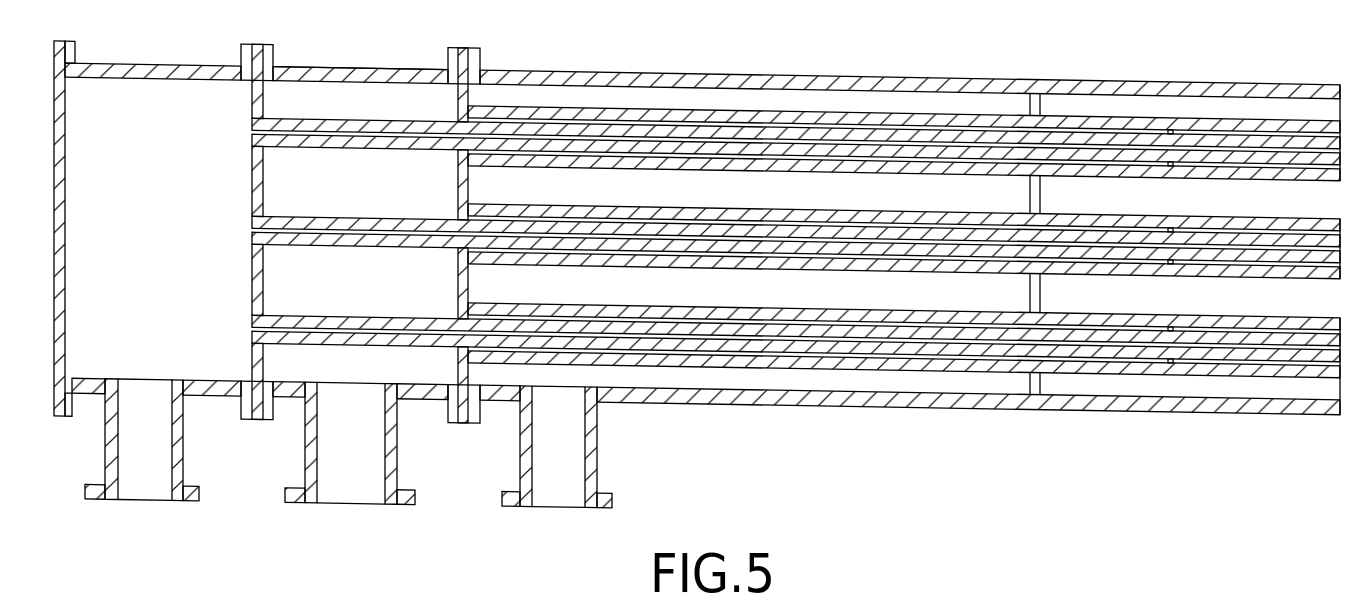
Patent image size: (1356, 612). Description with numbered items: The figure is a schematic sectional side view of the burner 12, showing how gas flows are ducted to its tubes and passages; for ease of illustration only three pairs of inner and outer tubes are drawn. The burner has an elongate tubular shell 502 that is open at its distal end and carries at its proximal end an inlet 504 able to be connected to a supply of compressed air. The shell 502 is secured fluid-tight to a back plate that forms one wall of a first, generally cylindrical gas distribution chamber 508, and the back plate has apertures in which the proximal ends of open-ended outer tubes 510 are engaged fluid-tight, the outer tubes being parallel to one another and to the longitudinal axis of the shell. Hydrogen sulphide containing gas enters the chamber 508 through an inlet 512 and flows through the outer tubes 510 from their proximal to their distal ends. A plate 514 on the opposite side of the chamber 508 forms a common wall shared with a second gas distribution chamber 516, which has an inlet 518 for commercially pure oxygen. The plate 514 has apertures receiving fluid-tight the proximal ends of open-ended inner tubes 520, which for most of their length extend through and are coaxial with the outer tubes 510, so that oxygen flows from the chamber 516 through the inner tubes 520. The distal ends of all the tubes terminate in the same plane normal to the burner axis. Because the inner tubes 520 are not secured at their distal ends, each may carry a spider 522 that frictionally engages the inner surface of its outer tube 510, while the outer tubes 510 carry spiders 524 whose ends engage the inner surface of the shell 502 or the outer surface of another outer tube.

The heat exchanger 12 is at (286, 66).
The elongate tubular shell 502 is at (985, 412).
The inlet 504 is at (597, 450).
The first gas distribution chamber 508 is at (460, 103).
The outer tubes 510 is at (830, 403).
The inlet 512 is at (305, 457).
The plate 514 is at (252, 186).
The second gas distribution chamber 516 is at (182, 243).
The inlet 518 is at (95, 500).
The inner tubes 520 is at (822, 150).
The spider 522 is at (1165, 137).
The spiders 524 is at (1038, 297).